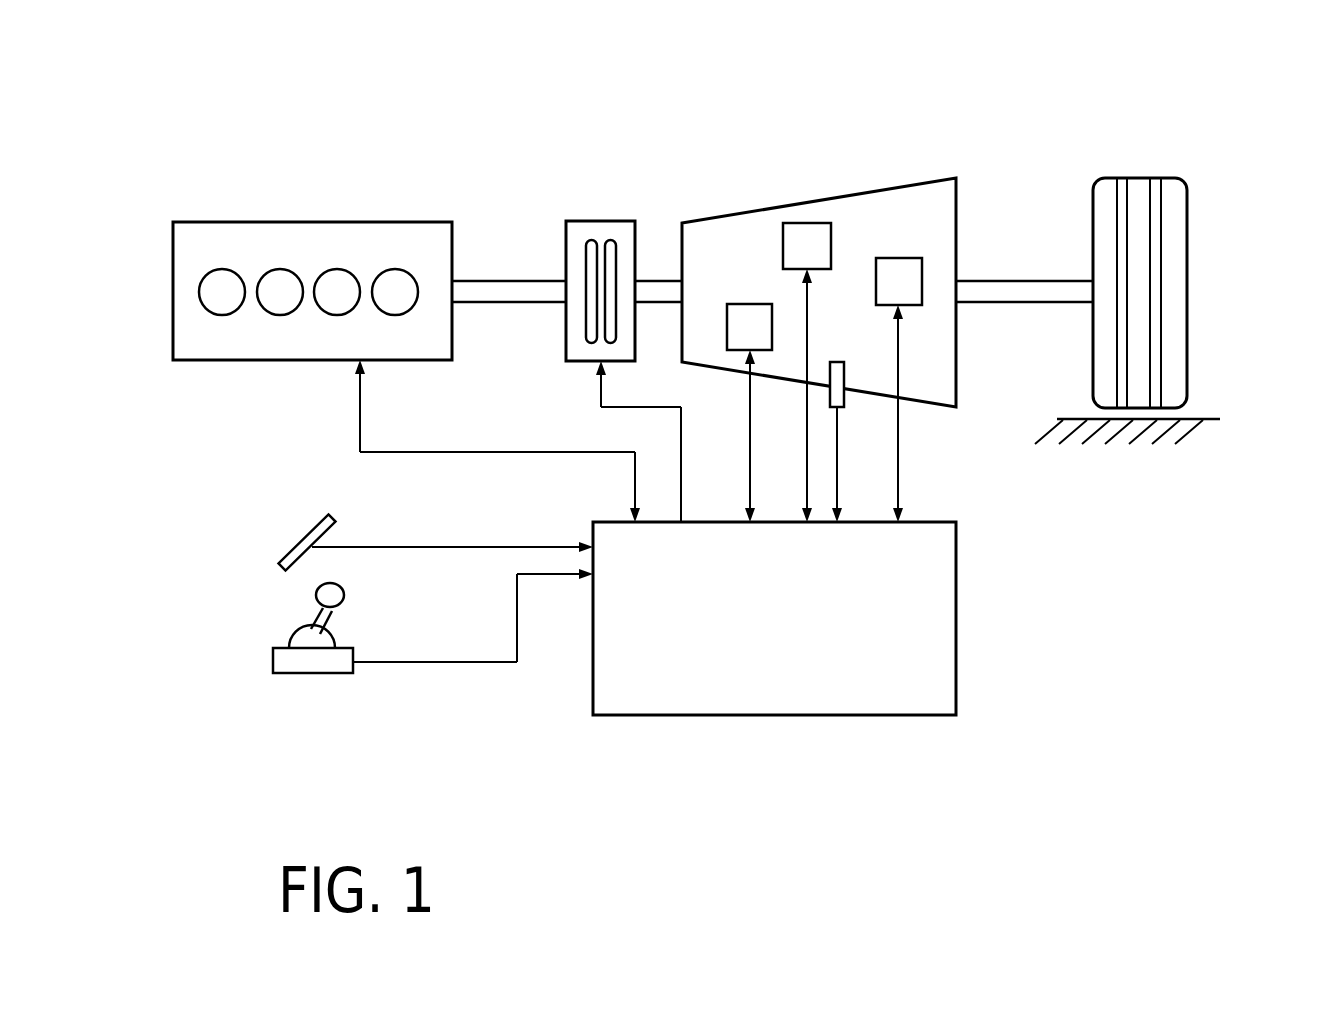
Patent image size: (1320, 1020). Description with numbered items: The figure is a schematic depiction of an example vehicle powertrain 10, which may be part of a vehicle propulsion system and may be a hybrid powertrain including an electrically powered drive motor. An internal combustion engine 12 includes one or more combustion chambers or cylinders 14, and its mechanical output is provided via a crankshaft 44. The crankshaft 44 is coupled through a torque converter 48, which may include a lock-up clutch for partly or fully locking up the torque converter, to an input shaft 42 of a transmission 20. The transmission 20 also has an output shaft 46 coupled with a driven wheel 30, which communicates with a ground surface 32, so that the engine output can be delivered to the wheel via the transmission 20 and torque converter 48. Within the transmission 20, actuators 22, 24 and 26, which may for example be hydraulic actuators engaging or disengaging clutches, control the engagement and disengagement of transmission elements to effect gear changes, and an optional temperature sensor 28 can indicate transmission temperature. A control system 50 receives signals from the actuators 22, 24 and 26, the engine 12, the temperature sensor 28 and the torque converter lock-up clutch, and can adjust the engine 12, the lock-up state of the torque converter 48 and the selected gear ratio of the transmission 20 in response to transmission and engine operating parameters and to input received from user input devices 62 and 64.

The vehicle powertrain 10 is at (474, 120).
The internal combustion engine 12 is at (231, 222).
The cylinders 14 is at (278, 315).
The transmission 20 is at (958, 200).
The transmission actuator 22 is at (742, 303).
The transmission actuator 24 is at (803, 222).
The transmission actuator 26 is at (903, 257).
The temperature sensor 28 is at (847, 400).
The driven wheel 30 is at (1188, 239).
The ground surface 32 is at (1198, 418).
The input shaft 42 is at (657, 280).
The crankshaft 44 is at (474, 280).
The output shaft 46 is at (995, 282).
The torque converter 48 is at (620, 220).
The control system 50 is at (924, 699).
The user input device 62 is at (302, 532).
The user input device 64 is at (328, 676).